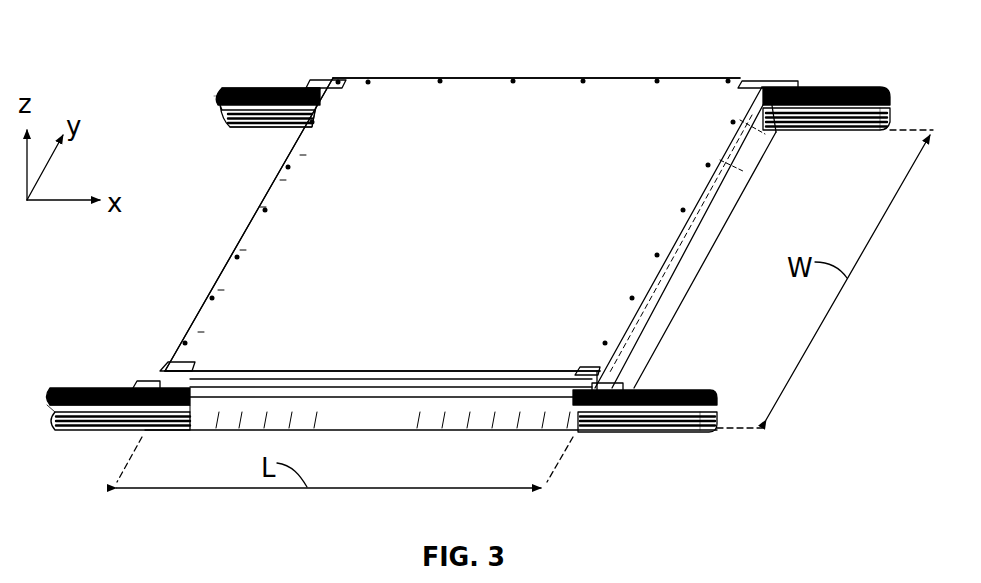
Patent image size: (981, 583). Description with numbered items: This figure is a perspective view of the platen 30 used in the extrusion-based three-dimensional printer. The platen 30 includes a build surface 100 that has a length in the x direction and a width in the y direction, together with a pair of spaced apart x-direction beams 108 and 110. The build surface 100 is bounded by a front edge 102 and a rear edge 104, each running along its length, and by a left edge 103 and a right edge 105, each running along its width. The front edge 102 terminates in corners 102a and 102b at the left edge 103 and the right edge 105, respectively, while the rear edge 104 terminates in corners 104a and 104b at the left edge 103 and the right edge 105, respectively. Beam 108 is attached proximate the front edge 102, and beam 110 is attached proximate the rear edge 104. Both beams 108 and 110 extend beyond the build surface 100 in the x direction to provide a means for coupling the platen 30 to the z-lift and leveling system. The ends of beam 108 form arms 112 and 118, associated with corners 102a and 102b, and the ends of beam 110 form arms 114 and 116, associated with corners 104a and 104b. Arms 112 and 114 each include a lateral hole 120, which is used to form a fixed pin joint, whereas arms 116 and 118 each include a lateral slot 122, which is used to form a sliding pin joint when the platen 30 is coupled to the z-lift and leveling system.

The platen 30 is at (237, 182).
The build surface 100 is at (525, 165).
The front edge 102 is at (407, 383).
The corner 102a is at (182, 362).
The corner 102b is at (582, 355).
The left edge 103 is at (225, 267).
The rear edge 104 is at (480, 78).
The corner 104a is at (347, 103).
The corner 104b is at (735, 98).
The right edge 105 is at (720, 165).
The x-direction beam 108 is at (72, 410).
The x-direction beam 110 is at (273, 87).
The arm 112 is at (62, 390).
The arm 114 is at (235, 88).
The arm 116 is at (872, 87).
The arm 118 is at (693, 393).
The lateral hole 120 is at (222, 115).
The lateral slot 122 is at (878, 110).